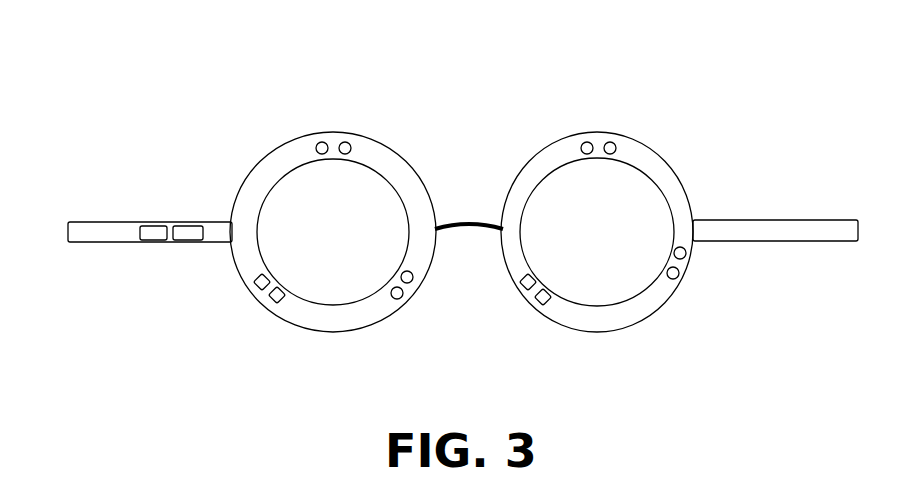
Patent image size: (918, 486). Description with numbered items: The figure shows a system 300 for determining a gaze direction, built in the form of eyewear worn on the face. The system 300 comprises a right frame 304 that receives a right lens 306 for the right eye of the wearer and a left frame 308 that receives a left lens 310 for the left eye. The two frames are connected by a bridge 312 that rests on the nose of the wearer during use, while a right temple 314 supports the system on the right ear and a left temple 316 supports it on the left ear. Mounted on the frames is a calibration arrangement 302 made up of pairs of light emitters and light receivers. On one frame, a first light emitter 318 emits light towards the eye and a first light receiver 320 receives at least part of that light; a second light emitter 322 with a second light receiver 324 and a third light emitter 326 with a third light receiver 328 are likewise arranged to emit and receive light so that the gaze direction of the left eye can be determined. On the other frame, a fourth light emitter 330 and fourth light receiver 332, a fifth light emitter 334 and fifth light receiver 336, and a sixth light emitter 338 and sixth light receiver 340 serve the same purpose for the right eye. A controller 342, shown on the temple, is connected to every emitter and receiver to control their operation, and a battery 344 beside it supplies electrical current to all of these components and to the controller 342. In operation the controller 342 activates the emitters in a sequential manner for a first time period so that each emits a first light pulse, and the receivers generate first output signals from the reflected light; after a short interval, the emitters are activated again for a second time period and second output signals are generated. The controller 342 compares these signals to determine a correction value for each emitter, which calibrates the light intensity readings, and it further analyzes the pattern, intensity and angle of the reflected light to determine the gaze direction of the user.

The system 300 is at (217, 72).
The calibration arrangement 302 is at (352, 112).
The right frame 304 is at (260, 157).
The right lens 306 is at (327, 295).
The left frame 308 is at (677, 163).
The left lens 310 is at (638, 267).
The bridge 312 is at (463, 224).
The right temple 314 is at (112, 222).
The left temple 316 is at (775, 219).
The first light emitter 318 is at (330, 130).
The first light receiver 320 is at (377, 130).
The second light emitter 322 is at (277, 313).
The second light receiver 324 is at (262, 300).
The third light emitter 326 is at (412, 290).
The third light receiver 328 is at (393, 297).
The fourth light emitter 330 is at (588, 137).
The fourth light receiver 332 is at (625, 137).
The fifth light emitter 334 is at (533, 300).
The fifth light receiver 336 is at (515, 280).
The sixth light emitter 338 is at (690, 255).
The sixth light receiver 340 is at (677, 281).
The controller 342 is at (180, 222).
The battery 344 is at (152, 243).